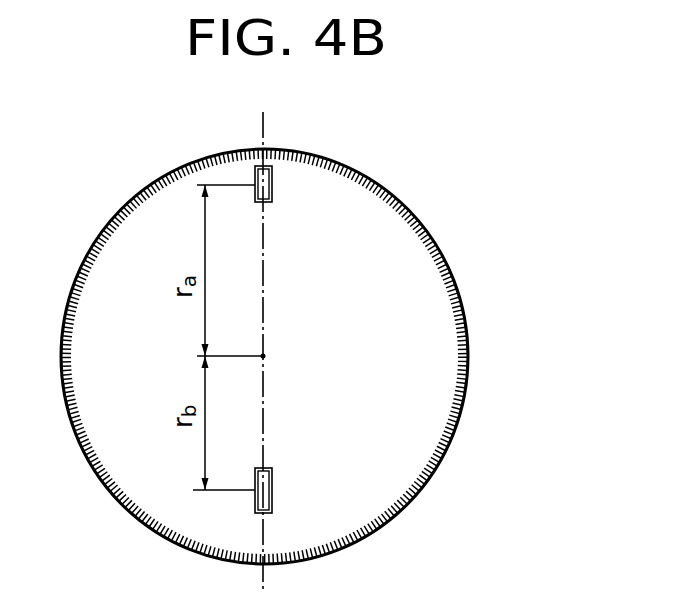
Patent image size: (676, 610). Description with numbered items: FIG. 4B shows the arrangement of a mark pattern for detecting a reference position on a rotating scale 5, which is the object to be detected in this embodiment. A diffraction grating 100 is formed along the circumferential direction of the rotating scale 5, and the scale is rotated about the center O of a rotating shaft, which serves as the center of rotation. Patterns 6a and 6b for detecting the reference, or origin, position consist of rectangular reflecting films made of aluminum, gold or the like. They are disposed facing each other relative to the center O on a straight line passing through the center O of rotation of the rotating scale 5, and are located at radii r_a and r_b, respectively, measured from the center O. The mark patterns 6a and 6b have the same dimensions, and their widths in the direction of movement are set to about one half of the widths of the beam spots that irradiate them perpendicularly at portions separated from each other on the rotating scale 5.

The rotating scale 5 is at (468, 335).
The diffraction grating 100 is at (433, 240).
The pattern for detecting the reference position 6a is at (272, 193).
The pattern for detecting the reference position 6b is at (272, 470).
The center of rotation O is at (266, 356).